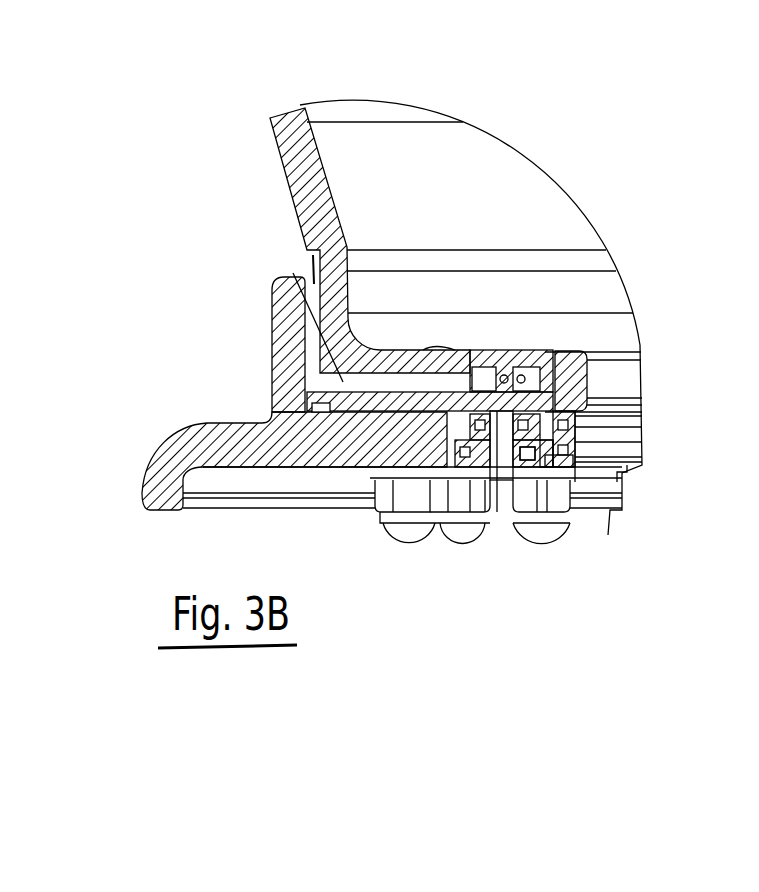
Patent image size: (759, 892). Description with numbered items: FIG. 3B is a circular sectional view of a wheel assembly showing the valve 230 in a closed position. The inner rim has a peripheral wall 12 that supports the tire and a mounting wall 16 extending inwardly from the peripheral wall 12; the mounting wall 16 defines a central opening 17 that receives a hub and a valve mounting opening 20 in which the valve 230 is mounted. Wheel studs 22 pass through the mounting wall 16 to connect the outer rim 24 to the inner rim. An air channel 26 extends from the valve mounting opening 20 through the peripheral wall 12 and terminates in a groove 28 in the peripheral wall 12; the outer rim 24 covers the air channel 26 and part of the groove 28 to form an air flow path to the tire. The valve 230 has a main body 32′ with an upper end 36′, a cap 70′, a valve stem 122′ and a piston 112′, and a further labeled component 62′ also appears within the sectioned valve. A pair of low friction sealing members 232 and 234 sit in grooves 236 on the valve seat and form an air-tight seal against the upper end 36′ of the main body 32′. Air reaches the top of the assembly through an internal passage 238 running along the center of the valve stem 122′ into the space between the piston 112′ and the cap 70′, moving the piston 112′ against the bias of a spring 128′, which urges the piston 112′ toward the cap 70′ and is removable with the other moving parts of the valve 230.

The peripheral wall 12 is at (282, 142).
The groove 28 is at (310, 268).
The air channel 26 is at (298, 277).
The outer rim member 24 is at (168, 448).
The mounting wall 16 is at (360, 413).
The wheel stud 22 is at (460, 530).
The sealing member 232 is at (480, 452).
The valve 230 is at (553, 348).
The stem 62′ is at (494, 462).
The sealing member 234 is at (478, 435).
The grooves 236 is at (484, 430).
The internal passage 238 is at (518, 400).
The valve mounting opening 20 is at (577, 388).
The valve stem 122′ is at (555, 345).
The central opening 17 is at (602, 367).
The main body 32′ is at (555, 436).
The upper end of the main body 36′ is at (555, 455).
The cap 70′ is at (571, 464).
The piston 112′ is at (531, 463).
The spring 128′ is at (548, 452).